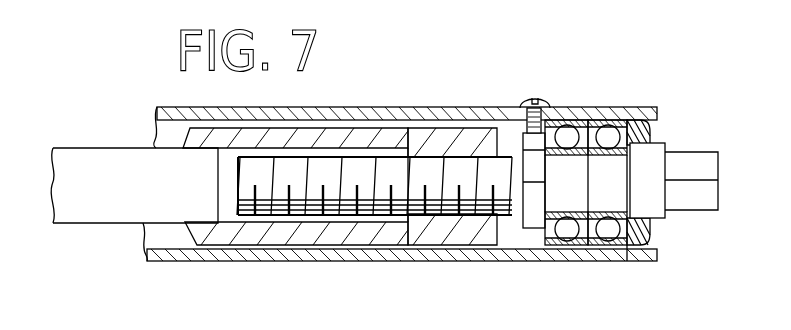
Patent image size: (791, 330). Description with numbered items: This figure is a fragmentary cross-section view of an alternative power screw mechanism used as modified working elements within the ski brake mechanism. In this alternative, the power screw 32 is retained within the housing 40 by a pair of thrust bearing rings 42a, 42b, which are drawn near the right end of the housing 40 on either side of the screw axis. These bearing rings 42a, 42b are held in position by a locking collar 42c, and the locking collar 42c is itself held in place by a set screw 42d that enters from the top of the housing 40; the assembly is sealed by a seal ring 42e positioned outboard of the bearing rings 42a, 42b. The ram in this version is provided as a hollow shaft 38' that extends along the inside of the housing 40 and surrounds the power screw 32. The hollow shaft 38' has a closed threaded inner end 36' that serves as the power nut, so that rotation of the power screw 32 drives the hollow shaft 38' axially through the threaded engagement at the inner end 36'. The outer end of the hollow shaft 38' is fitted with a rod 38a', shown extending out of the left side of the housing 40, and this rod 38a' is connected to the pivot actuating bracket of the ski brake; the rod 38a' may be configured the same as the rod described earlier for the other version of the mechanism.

The housing 40 is at (435, 107).
The hollow shaft 38' is at (295, 224).
The closed threaded inner end 36' is at (452, 223).
The rod 38a' is at (134, 216).
The power screw 32 is at (333, 203).
The locking collar 42c is at (533, 208).
The set screw 42d is at (542, 97).
The thrust bearing ring 42a is at (570, 233).
The thrust bearing ring 42b is at (617, 235).
The seal ring 42e is at (650, 140).